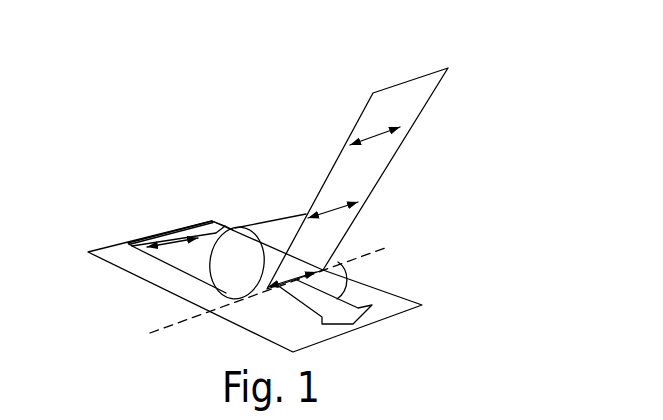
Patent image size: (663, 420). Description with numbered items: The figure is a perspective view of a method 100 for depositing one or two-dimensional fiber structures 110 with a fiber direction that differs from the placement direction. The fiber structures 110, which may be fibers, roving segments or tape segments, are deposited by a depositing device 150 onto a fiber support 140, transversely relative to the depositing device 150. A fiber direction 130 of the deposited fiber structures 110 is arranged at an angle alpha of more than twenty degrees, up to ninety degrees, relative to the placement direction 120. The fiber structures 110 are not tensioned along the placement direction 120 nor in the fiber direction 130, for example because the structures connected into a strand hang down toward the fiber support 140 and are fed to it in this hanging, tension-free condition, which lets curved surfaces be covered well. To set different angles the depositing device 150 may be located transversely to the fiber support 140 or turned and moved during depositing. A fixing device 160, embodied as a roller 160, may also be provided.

The method 100 is at (480, 213).
The 1 or 2-dimensional fiber structures 110 is at (435, 95).
The placement direction 120 is at (338, 298).
The fiber direction 130 is at (357, 126).
The fiber support 140 is at (393, 320).
The depositing device 150 is at (223, 275).
The fixing device 160 is at (223, 255).